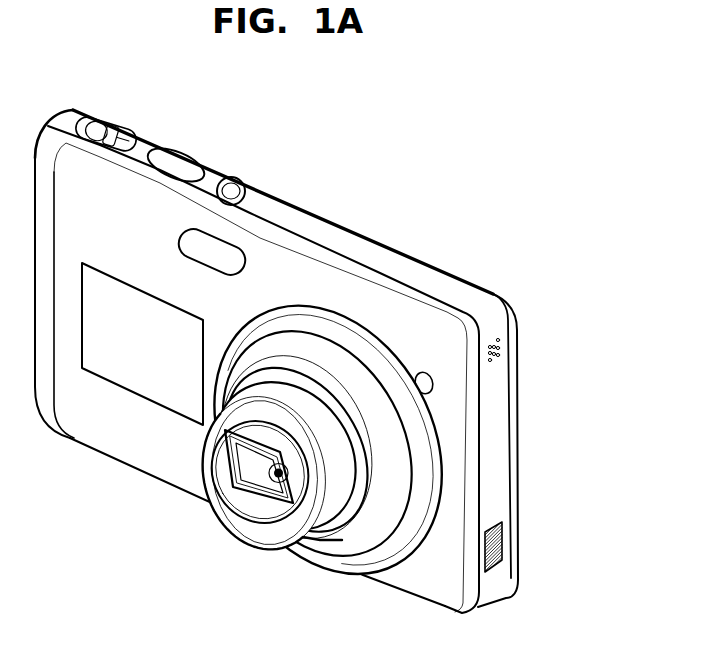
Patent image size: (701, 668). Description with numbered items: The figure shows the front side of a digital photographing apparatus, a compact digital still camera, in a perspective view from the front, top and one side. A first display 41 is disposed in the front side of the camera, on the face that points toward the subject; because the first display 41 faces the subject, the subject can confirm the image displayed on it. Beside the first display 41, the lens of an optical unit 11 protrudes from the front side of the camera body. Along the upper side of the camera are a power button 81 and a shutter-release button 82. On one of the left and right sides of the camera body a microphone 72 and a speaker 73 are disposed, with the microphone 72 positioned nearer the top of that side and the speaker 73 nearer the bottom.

The optical unit 11 is at (277, 478).
The first display 41 is at (132, 378).
The microphone 72 is at (493, 348).
The speaker 73 is at (497, 545).
The power button 81 is at (231, 190).
The shutter-release button 82 is at (177, 163).